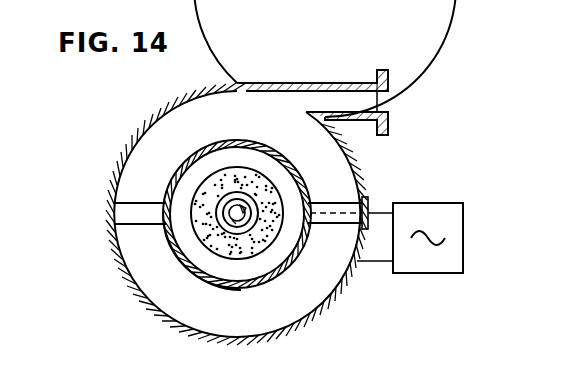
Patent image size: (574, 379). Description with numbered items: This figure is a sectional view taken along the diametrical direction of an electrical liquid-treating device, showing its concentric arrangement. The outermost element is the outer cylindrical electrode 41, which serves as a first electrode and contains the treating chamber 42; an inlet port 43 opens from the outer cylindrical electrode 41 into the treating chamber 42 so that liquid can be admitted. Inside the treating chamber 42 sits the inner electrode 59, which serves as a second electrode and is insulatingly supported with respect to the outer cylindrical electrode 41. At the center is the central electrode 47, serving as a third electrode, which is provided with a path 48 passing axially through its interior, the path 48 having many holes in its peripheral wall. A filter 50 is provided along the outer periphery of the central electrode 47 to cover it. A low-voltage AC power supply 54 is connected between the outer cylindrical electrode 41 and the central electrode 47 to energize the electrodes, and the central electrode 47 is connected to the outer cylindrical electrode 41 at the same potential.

The outer cylindrical electrode 41 is at (158, 108).
The treating chamber 42 is at (227, 113).
The inlet port 43 is at (380, 103).
The central electrode 47 is at (255, 225).
The path 48 is at (248, 203).
The filter 50 is at (215, 236).
The low-voltage AC power supply 54 is at (420, 206).
The inner electrode 59 is at (168, 183).